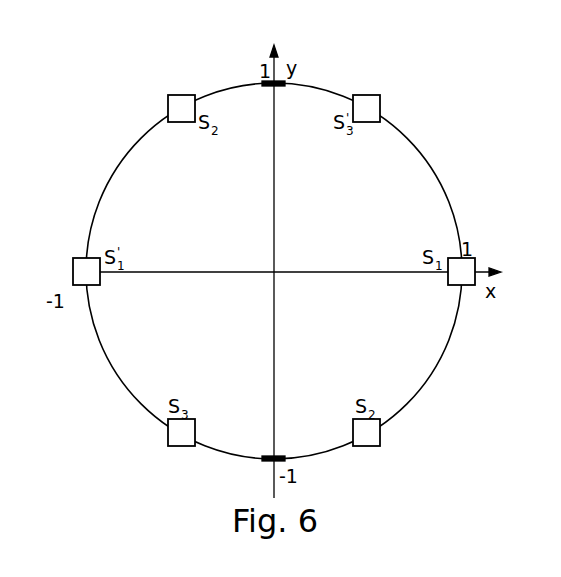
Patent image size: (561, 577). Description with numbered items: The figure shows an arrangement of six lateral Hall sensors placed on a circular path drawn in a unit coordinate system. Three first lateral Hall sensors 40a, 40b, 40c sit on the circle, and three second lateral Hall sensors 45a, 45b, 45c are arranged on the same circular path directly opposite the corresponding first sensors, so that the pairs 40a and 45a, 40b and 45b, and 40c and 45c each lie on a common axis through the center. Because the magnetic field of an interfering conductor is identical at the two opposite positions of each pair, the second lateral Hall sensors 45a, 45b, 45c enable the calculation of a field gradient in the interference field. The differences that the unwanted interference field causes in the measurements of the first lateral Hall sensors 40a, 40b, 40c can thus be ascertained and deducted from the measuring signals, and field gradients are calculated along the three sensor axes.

The first lateral Hall sensor 40a is at (182, 97).
The first lateral Hall sensor 40b is at (483, 265).
The first lateral Hall sensor 40c is at (180, 446).
The second lateral Hall sensor 45a is at (368, 446).
The second lateral Hall sensor 45b is at (73, 272).
The second lateral Hall sensor 45c is at (393, 98).